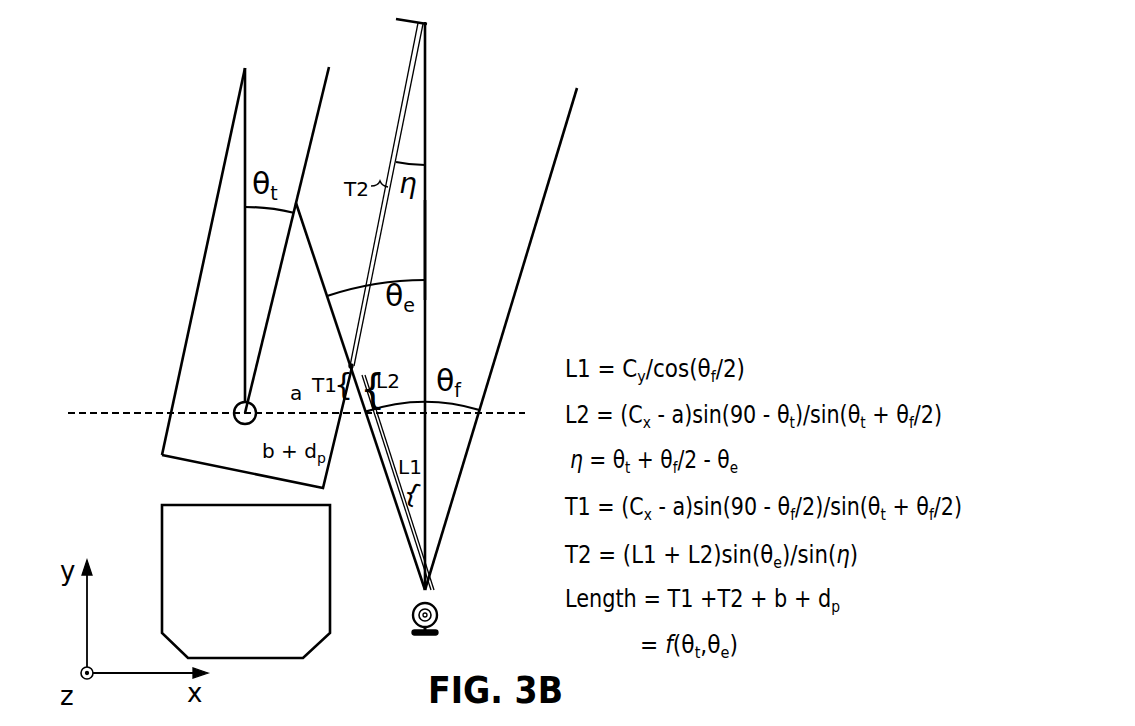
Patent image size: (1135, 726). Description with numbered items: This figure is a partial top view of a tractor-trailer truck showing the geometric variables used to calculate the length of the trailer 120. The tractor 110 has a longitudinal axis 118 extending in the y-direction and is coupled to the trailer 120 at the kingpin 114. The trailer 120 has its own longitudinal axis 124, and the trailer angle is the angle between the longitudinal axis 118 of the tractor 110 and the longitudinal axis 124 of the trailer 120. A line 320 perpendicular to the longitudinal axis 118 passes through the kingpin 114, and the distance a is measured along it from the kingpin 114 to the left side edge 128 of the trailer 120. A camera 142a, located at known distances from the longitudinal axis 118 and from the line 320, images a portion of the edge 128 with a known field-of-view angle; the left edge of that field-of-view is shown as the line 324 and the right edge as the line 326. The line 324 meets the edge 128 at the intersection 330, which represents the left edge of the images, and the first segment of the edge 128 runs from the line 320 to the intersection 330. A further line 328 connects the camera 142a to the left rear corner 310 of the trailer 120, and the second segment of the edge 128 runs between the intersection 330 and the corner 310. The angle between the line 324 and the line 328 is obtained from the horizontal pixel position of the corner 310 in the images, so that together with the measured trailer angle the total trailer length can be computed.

The tractor 110 is at (162, 568).
The kingpin 114 is at (236, 404).
The longitudinal axis 118 is at (238, 150).
The trailer 120 is at (219, 278).
The longitudinal axis 124 is at (322, 86).
The edge 128 is at (381, 177).
The camera 142a is at (438, 613).
The left rear corner 310 is at (425, 23).
The line 320 is at (110, 413).
The line 324 is at (397, 518).
The line 326 is at (532, 242).
The line 328 is at (427, 238).
The intersection 330 is at (351, 366).